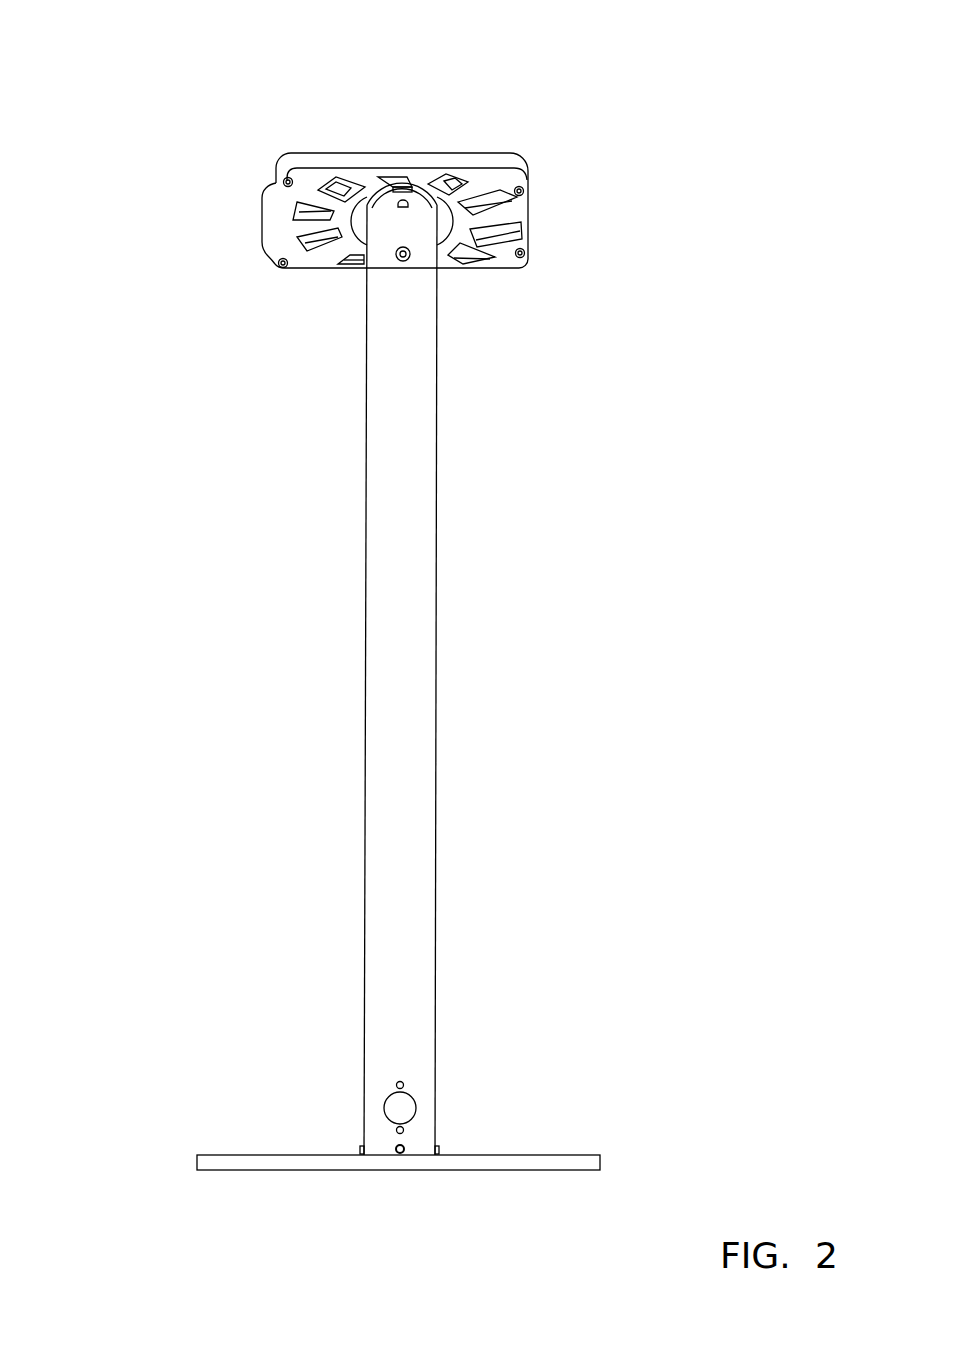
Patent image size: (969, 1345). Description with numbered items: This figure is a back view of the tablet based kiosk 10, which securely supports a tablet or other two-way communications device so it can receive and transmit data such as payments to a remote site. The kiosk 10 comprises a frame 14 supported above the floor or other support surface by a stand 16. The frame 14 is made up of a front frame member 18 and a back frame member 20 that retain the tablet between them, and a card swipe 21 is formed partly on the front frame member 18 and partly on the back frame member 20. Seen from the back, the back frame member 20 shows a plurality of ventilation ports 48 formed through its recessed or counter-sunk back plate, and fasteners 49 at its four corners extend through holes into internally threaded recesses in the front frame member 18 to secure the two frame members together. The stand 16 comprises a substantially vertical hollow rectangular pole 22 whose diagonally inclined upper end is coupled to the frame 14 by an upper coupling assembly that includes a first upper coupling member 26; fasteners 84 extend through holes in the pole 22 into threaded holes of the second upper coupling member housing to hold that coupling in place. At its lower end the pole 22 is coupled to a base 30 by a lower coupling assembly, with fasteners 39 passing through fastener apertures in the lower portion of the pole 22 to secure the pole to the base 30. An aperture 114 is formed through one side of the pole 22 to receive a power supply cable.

The tablet based kiosk 10 is at (190, 665).
The frame 14 is at (512, 133).
The stand 16 is at (468, 675).
The front frame member 18 is at (280, 147).
The back frame member 20 is at (300, 276).
The card swipe 21 is at (238, 215).
The substantially vertical hollow rectangular pole 22 is at (435, 530).
The first upper coupling member 26 is at (400, 176).
The base 30 is at (578, 1108).
The fastener 39 is at (361, 1148).
The ventilation ports 48 is at (341, 178).
The fasteners 49 is at (284, 179).
The fasteners 84 is at (399, 261).
The aperture 114 is at (409, 1095).